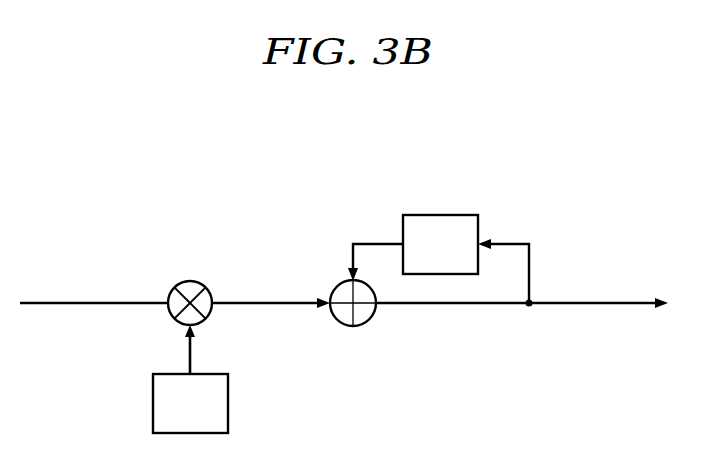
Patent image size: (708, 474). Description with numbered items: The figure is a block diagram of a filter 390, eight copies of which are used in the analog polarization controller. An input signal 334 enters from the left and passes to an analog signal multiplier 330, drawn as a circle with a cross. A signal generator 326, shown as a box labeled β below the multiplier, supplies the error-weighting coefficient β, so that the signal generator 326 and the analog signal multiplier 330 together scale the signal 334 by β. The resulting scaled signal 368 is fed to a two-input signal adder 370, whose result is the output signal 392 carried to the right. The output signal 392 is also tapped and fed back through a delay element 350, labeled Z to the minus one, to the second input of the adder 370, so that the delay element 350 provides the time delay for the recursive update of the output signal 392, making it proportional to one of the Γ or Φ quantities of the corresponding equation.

The filter 390 is at (378, 147).
The signal 334 is at (100, 305).
The analog signal multiplier 330 is at (190, 280).
The signal generator 326 is at (228, 405).
The scaled signal 368 is at (272, 300).
The two-input signal adder 370 is at (352, 326).
The delay element 350 is at (455, 215).
The output signal 392 is at (587, 305).